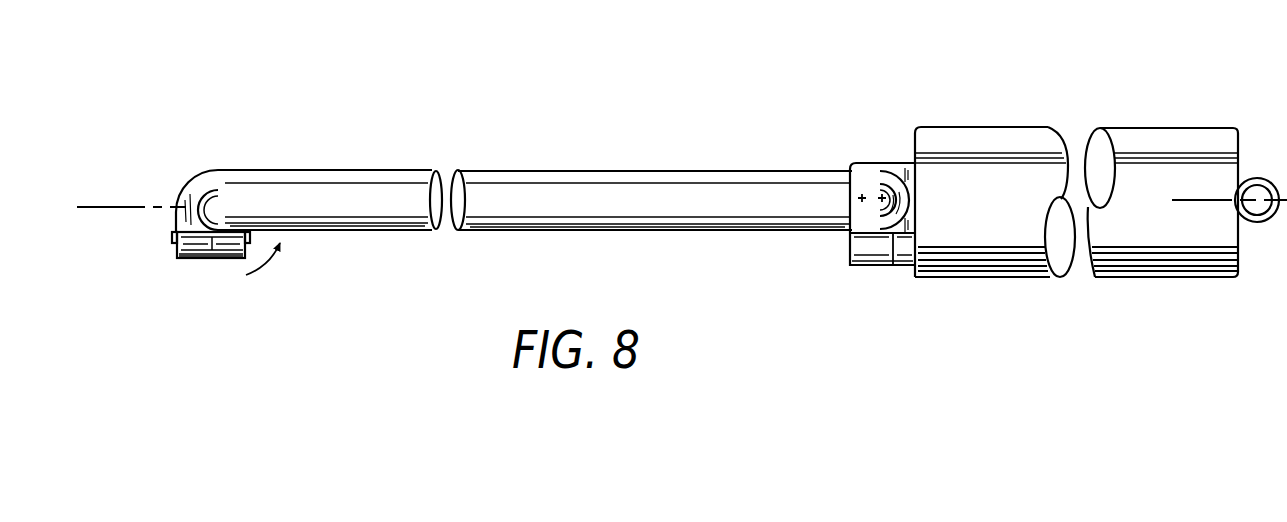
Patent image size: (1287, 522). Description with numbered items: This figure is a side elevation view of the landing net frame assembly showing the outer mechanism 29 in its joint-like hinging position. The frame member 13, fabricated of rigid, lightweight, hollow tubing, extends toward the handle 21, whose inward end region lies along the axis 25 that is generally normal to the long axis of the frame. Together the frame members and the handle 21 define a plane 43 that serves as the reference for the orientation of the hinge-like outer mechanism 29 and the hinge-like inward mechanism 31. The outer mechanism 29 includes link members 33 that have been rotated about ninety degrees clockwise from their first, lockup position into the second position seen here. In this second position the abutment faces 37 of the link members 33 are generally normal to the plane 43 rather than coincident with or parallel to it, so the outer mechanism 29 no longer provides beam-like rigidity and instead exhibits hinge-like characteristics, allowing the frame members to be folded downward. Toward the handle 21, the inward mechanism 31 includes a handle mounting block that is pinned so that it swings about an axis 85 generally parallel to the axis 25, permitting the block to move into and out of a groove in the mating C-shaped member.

The frame member 13 is at (550, 178).
The handle 21 is at (1000, 133).
The axis 25 is at (882, 192).
The outer mechanism 29 is at (187, 148).
The inward mechanism 31 is at (828, 130).
The link members 33 is at (192, 287).
The abutment faces 37 is at (211, 261).
The plane 43 is at (267, 205).
The axis 85 is at (860, 204).